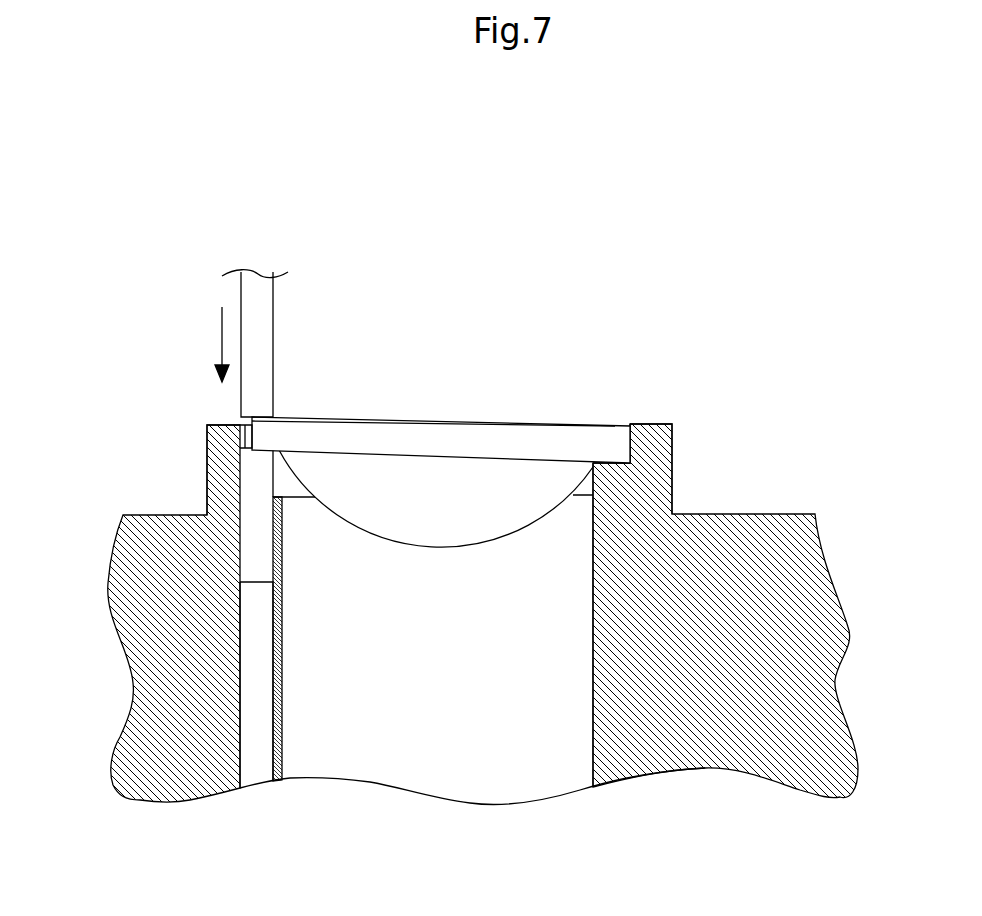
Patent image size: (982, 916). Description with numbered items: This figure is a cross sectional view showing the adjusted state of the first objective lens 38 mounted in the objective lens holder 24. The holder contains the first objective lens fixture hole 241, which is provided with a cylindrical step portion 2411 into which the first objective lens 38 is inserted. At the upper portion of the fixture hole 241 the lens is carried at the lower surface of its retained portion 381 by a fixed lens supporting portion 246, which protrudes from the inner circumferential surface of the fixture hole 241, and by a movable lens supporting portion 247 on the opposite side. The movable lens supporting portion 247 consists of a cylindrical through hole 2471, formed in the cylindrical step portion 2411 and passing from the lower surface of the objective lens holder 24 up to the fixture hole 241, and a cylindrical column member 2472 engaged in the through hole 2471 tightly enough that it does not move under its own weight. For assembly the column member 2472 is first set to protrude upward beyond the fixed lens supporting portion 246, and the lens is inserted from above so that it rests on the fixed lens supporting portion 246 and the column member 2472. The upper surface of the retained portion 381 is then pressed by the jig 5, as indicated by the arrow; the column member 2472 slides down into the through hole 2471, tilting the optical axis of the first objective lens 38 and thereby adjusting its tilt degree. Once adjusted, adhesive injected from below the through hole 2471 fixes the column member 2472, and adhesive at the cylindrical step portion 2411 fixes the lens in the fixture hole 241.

The jig 5 is at (263, 338).
The first objective lens 38 is at (437, 475).
The retained portion 381 is at (265, 435).
The fixed lens supporting portion 246 is at (608, 470).
The cylindrical step portion 2411 is at (673, 426).
The objective lens holder 24 is at (742, 551).
The column member 2472 is at (265, 508).
The through hole 2471 is at (253, 733).
The movable lens supporting portion 247 is at (263, 677).
The first objective lens fixture hole 241 is at (575, 752).